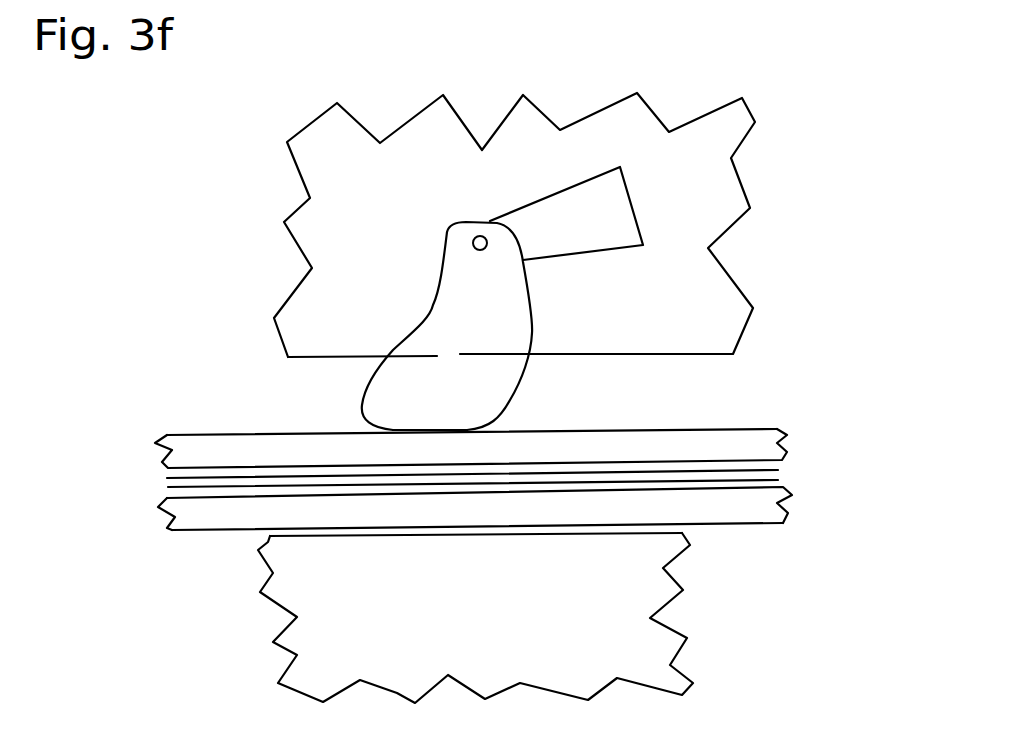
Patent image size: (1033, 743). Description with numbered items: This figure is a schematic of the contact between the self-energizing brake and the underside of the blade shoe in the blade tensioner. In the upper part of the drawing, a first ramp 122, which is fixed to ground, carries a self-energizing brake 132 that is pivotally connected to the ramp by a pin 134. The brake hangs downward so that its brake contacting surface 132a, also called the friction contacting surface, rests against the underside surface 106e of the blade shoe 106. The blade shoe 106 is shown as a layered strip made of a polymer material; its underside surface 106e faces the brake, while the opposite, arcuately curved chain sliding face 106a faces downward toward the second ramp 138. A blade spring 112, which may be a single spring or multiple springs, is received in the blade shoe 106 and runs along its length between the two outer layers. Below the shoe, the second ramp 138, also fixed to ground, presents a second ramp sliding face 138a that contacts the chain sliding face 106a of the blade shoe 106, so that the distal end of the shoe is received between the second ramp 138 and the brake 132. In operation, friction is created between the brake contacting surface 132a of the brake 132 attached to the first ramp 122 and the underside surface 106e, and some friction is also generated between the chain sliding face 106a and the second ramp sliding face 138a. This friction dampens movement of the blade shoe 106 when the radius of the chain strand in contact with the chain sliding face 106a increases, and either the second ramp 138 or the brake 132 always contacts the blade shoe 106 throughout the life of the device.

The first ramp 122 is at (732, 183).
The self-energizing brake 132 is at (510, 331).
The brake contacting surface 132a is at (455, 428).
The pin 134 is at (476, 238).
The blade shoe 106 is at (757, 442).
The underside surface 106e is at (657, 430).
The chain sliding face 106a is at (217, 533).
The blade spring 112 is at (753, 480).
The second ramp 138 is at (530, 617).
The second ramp sliding face 138a is at (623, 532).